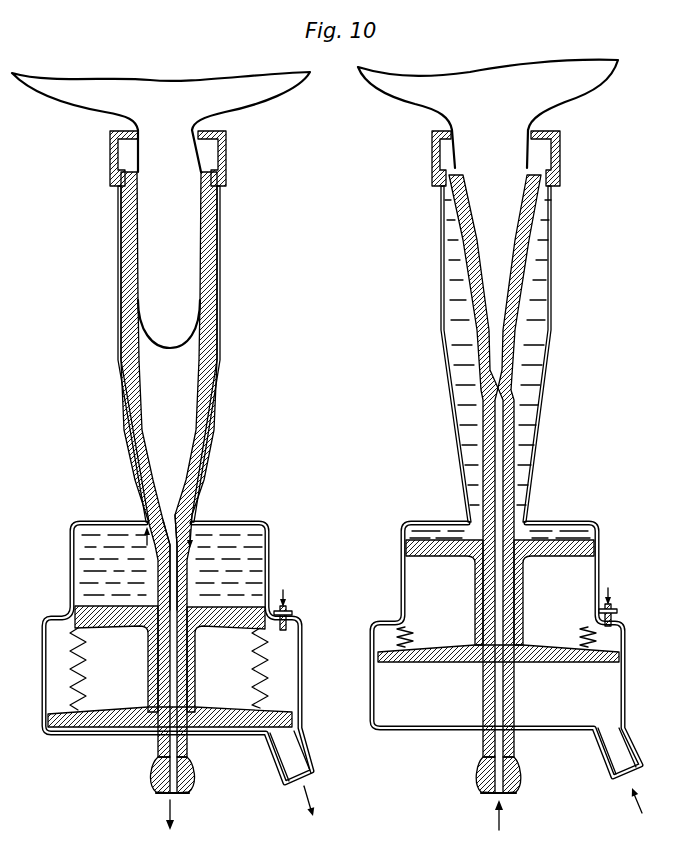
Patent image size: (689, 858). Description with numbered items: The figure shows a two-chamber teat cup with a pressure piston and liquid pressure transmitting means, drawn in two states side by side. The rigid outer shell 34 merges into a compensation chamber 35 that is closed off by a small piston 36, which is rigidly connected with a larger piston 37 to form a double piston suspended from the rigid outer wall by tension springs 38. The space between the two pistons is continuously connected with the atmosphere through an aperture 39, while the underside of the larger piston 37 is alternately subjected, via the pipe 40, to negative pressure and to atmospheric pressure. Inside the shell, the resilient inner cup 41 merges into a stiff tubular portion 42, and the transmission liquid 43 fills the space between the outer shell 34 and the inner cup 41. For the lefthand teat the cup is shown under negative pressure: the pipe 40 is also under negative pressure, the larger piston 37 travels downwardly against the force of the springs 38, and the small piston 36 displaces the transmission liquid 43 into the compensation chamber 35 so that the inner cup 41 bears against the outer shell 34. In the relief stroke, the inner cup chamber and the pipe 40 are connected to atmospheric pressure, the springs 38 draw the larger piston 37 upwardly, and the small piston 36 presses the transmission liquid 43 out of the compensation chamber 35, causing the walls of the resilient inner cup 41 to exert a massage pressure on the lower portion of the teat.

The outer shell 34 is at (216, 300).
The compensation chamber 35 is at (425, 583).
The piston 36 is at (222, 613).
The larger piston 37 is at (107, 723).
The tension spring 38 is at (85, 677).
The aperture 39 is at (287, 608).
The pipe 40 is at (283, 783).
The inner cup 41 is at (130, 386).
The tubular portion 42 is at (180, 583).
The transmission liquid 43 is at (103, 547).